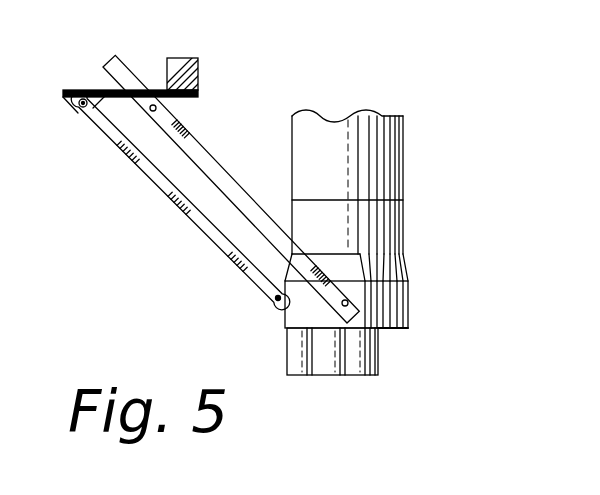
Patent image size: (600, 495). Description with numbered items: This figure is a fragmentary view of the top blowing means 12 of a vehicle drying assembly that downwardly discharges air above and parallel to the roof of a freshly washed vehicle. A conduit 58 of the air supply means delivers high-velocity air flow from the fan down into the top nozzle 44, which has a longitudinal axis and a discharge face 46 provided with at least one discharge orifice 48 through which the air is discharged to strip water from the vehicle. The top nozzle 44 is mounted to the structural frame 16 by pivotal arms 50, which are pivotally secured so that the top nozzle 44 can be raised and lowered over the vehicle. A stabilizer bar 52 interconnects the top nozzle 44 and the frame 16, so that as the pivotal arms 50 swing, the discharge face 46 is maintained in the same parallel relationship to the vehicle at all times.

The top blowing means 12 is at (414, 262).
The frame 16 is at (192, 64).
The top nozzle 44 is at (398, 303).
The discharge face 46 is at (388, 330).
The discharge orifice 48 is at (355, 377).
The pivotal arms 50 is at (222, 172).
The stabilizer bar 52 is at (140, 178).
The conduit 58 is at (388, 141).